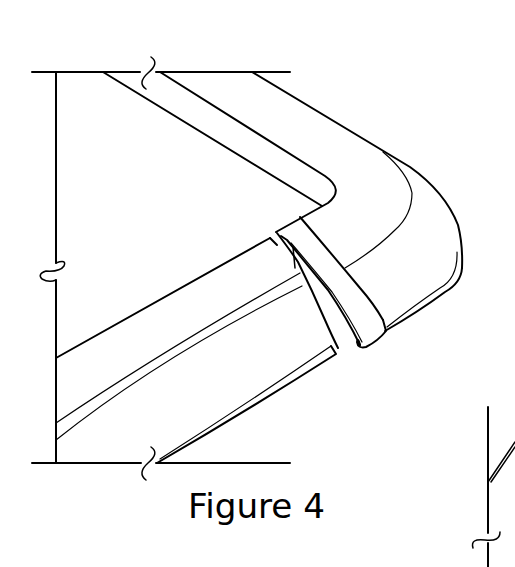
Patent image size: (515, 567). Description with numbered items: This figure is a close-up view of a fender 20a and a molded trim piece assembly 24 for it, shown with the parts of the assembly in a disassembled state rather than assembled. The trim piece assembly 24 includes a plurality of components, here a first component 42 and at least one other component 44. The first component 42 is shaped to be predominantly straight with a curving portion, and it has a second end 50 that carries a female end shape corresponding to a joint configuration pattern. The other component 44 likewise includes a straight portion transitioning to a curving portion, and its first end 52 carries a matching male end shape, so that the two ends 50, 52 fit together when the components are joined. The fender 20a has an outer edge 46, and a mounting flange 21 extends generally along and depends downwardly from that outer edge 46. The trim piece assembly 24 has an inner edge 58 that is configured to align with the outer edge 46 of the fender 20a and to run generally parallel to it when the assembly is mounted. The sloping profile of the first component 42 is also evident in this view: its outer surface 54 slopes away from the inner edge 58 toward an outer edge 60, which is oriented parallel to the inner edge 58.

The fender 20a is at (98, 88).
The inner edge 58 is at (180, 83).
The outer edge 46 is at (228, 138).
The first component 42 is at (304, 98).
The molded trim piece assembly 24 is at (428, 170).
The outer surface 54 is at (427, 198).
The mounting flange 21 is at (272, 236).
The outer edge 60 is at (418, 317).
The second end 50 is at (354, 344).
The first end 52 is at (338, 350).
The other component 44 is at (270, 384).